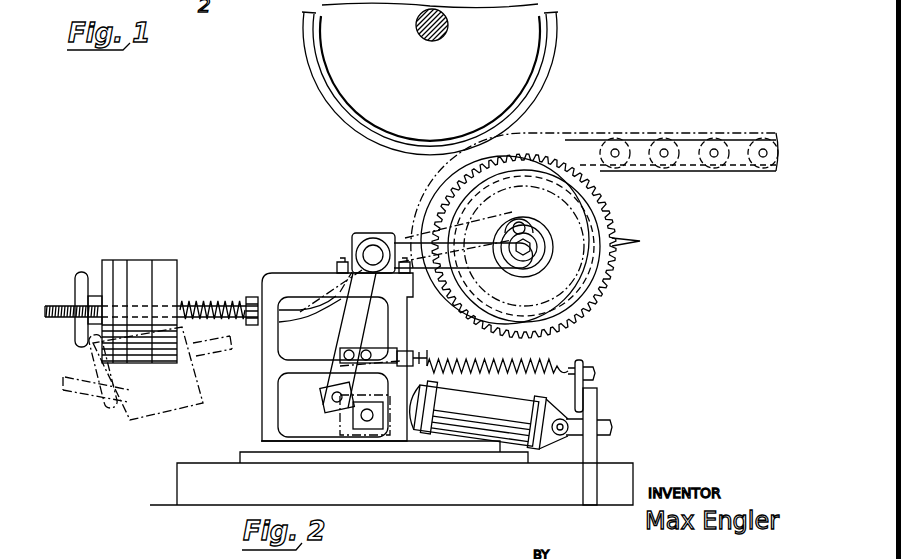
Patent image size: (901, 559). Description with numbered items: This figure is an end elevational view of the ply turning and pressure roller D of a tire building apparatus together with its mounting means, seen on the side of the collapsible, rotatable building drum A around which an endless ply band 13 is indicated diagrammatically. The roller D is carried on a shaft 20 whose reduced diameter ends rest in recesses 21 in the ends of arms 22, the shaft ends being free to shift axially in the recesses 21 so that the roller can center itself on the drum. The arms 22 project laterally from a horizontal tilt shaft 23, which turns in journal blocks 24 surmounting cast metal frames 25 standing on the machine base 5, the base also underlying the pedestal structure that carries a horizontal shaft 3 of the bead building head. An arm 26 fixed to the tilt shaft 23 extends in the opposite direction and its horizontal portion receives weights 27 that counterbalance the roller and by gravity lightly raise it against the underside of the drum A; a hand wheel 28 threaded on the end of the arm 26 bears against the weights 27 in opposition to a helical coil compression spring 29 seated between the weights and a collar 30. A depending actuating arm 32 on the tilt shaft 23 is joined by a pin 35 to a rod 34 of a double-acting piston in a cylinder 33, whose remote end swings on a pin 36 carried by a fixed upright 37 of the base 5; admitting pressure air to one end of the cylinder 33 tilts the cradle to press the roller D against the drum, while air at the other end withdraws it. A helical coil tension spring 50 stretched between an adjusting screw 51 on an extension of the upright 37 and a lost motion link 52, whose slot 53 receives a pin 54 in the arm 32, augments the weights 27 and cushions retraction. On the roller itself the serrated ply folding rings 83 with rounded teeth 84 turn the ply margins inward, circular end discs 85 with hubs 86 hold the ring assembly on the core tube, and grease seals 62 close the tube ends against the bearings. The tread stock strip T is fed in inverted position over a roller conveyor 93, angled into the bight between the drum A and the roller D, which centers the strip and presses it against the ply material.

The horizontal shaft 3 is at (448, 30).
The base 5 is at (202, 504).
The endless ply band 13 is at (556, 48).
The shaft 20 is at (526, 252).
The recesses 21 is at (537, 250).
The arms 22 is at (419, 244).
The tilt shaft 23 is at (373, 252).
The journal blocks 24 is at (352, 238).
The cast metal frames 25 is at (296, 280).
The arm 26 is at (318, 300).
The weights 27 is at (165, 263).
The hand wheel 28 is at (86, 280).
The helical coil compression spring 29 is at (200, 302).
The collar 30 is at (250, 297).
The actuating arm 32 is at (360, 323).
The cylinder 33 is at (512, 440).
The rod 34 is at (428, 393).
The pin 35 is at (330, 402).
The pin 36 is at (559, 440).
The fixed upright 37 is at (598, 404).
The helical coil tension spring 50 is at (522, 362).
The adjusting screw 51 is at (585, 364).
The lost motion link 52 is at (380, 351).
The slot 53 is at (352, 348).
The pin 54 is at (346, 355).
The grease seals 62 is at (512, 230).
The ply folding rings 83 is at (612, 270).
The teeth 84 is at (641, 243).
The circular end discs 85 is at (532, 200).
The hubs 86 is at (560, 226).
The roller conveyor 93 is at (698, 173).
The building drum A is at (425, 84).
The tread stock strip T is at (651, 136).
The pressure roller D is at (613, 300).